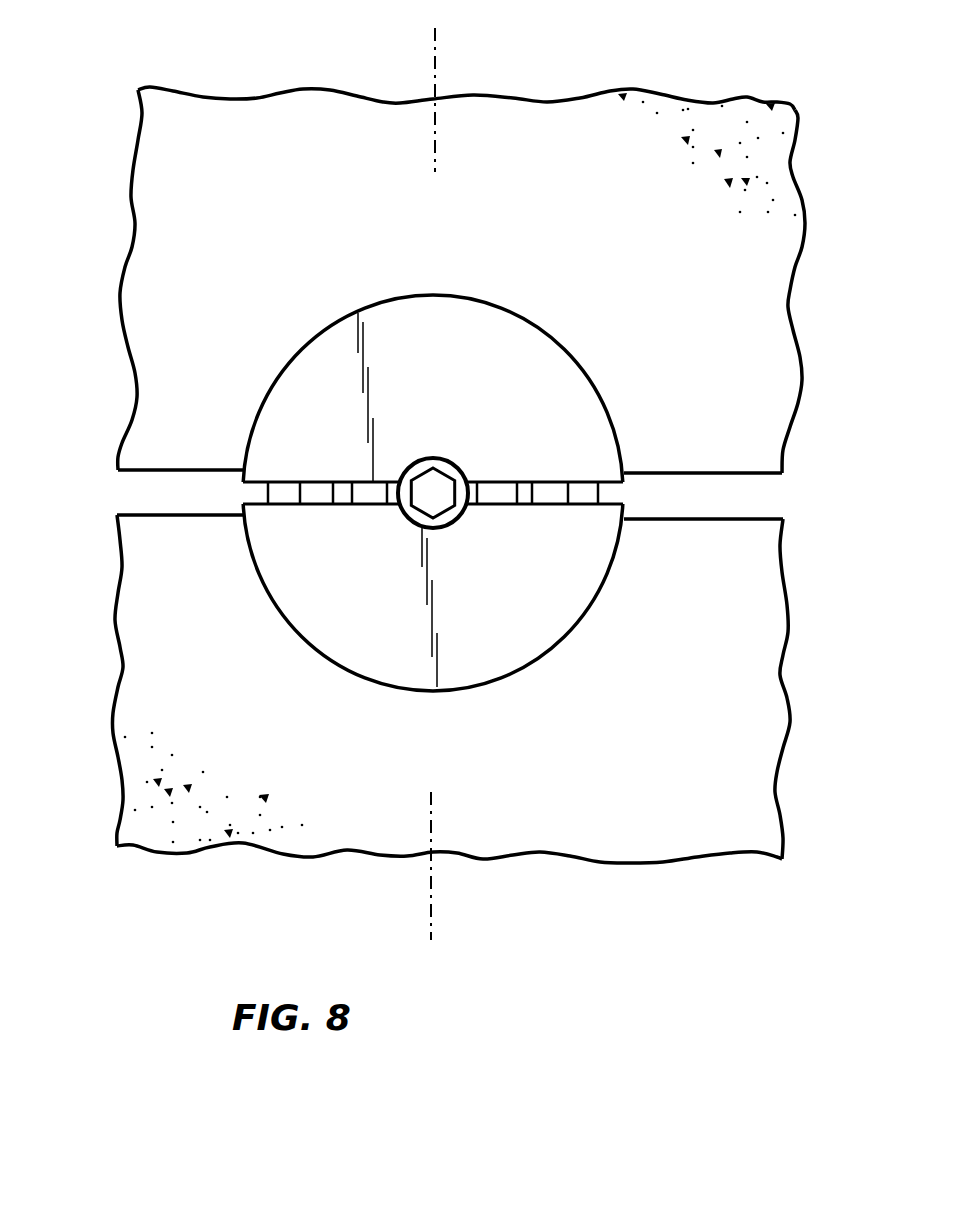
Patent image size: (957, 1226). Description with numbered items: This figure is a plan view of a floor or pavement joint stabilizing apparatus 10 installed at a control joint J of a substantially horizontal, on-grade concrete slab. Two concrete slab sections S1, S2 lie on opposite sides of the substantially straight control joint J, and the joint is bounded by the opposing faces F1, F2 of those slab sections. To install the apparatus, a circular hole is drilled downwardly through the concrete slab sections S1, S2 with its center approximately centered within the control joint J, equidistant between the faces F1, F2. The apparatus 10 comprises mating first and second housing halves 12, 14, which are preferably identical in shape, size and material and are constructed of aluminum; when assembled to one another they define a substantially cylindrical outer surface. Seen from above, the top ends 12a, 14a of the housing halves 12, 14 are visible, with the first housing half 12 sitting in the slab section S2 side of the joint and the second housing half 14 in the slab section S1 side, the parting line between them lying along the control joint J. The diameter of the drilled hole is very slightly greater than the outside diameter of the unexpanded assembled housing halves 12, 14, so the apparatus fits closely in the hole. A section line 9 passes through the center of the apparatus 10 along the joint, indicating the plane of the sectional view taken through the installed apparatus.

The section line 9- 9 is at (390, 935).
The floor or pavement joint stabilizing apparatus 10 is at (299, 677).
The first housing half 12 is at (561, 617).
The top end of first housing half 12a is at (359, 606).
The second housing half 14 is at (556, 359).
The top end of second housing half 14a is at (532, 438).
The first concrete slab section S1 is at (235, 231).
The second concrete slab section S2 is at (657, 771).
The face of first concrete slab section F1 is at (140, 472).
The face of second concrete slab section F2 is at (139, 514).
The control joint J is at (752, 496).